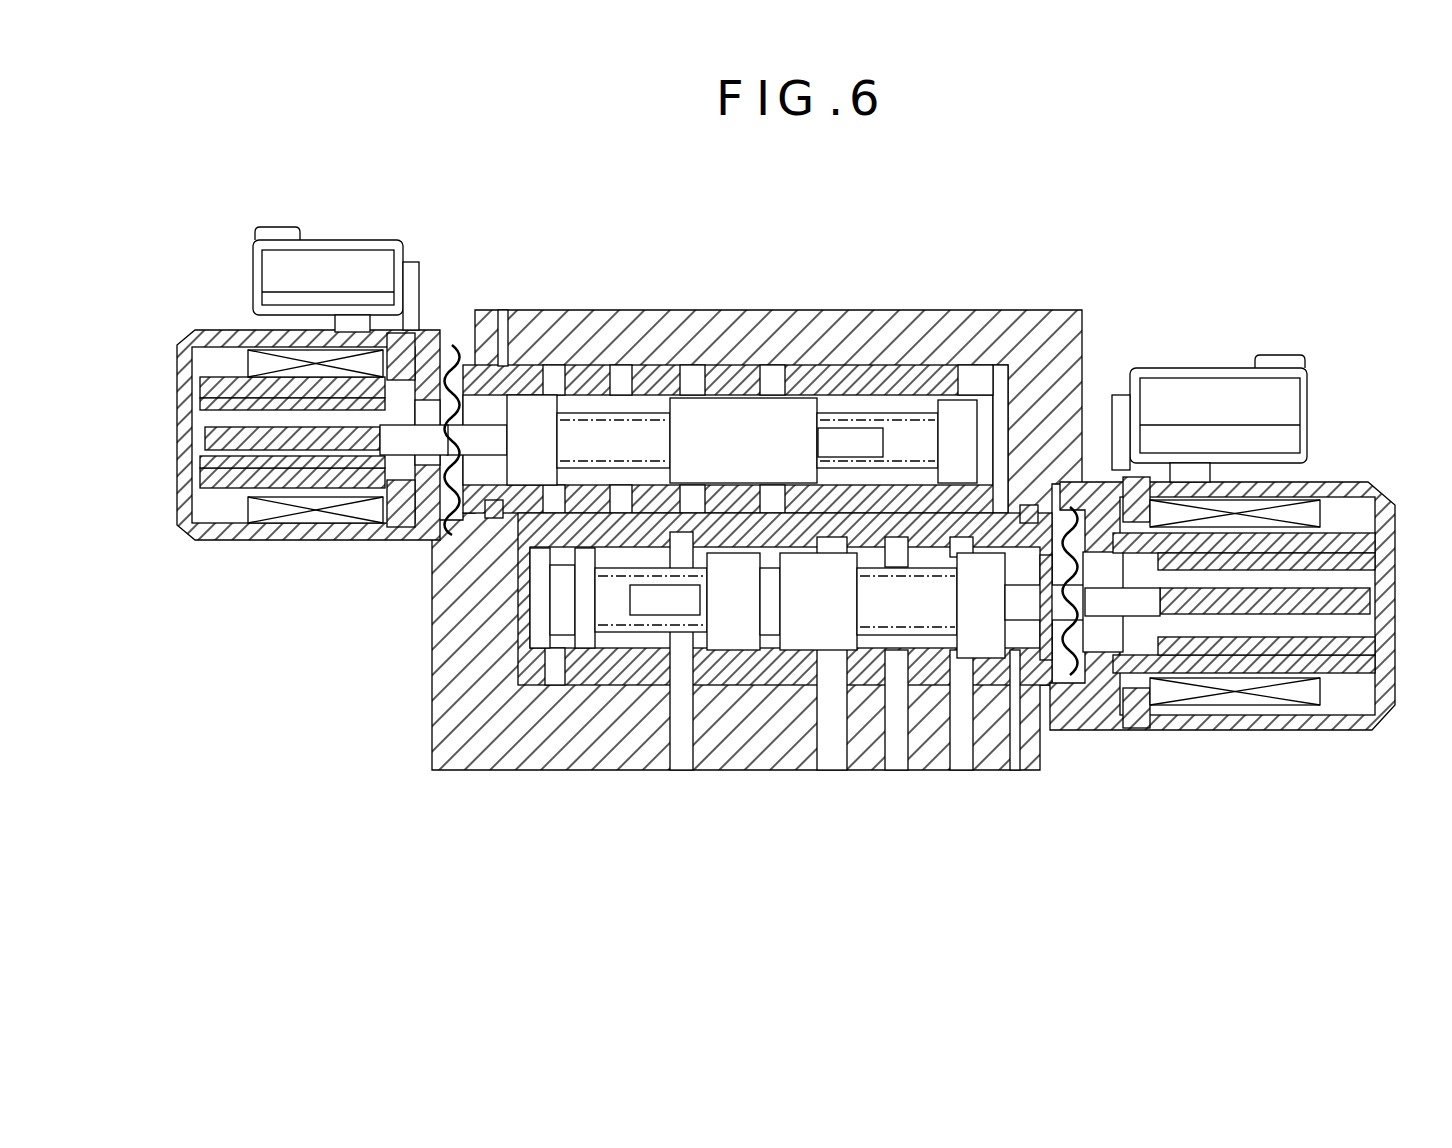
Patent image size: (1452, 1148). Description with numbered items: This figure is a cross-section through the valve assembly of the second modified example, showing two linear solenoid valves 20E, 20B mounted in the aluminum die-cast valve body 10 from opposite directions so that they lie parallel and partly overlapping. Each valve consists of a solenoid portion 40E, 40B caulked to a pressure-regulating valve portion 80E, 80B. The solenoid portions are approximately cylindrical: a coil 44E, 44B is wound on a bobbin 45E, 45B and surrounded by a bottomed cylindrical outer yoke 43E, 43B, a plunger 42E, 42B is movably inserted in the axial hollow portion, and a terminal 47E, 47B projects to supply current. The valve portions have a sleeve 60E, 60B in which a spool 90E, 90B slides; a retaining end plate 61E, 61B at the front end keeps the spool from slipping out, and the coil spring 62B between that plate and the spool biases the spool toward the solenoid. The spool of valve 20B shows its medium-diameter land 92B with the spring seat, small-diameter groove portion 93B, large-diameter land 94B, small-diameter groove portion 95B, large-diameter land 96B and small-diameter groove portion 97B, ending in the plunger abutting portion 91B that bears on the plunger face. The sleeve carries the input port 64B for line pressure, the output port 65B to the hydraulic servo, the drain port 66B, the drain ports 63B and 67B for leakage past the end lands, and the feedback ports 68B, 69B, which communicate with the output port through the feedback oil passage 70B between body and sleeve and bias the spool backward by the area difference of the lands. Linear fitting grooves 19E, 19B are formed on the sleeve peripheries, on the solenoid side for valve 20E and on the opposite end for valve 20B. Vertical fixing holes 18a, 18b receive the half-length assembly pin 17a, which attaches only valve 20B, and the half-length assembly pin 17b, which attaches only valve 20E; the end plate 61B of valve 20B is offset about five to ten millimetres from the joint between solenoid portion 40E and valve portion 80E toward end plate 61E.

The valve body 10 is at (479, 771).
The linear solenoid valve 20E is at (768, 343).
The linear solenoid valve 20B is at (735, 721).
The sleeve 60E is at (650, 365).
The sleeve 60B is at (625, 657).
The retaining end plate 61E is at (998, 422).
The retaining end plate 61B is at (537, 622).
The coil spring 62B is at (600, 662).
The drain port 63B is at (678, 752).
The input port 64B is at (831, 752).
The output port 65B is at (896, 752).
The drain port 66B is at (960, 752).
The drain port 67B is at (1015, 752).
The feedback port 68B is at (945, 400).
The feedback port 69B is at (766, 400).
The feedback oil passage 70B is at (865, 428).
The pressure-regulating valve portion 80E is at (967, 370).
The pressure-regulating valve portion 80B is at (660, 700).
The spool 90E is at (743, 351).
The spool 90B is at (689, 726).
The plunger abutting portion 91B is at (1122, 618).
The medium-diameter land 92B is at (735, 632).
The small-diameter groove portion 93B is at (758, 648).
The large-diameter land 94B is at (835, 650).
The small-diameter groove portion 95B is at (930, 627).
The large-diameter land 96B is at (990, 652).
The small-diameter groove portion 97B is at (1027, 657).
The fitting groove 19E is at (494, 492).
The fitting groove 19B is at (1055, 662).
The assembly pin 17a is at (1072, 560).
The assembly pin 17b is at (446, 520).
The fixing hole 18a is at (1032, 505).
The fixing hole 18b is at (492, 518).
The solenoid portion 40E is at (303, 373).
The solenoid portion 40B is at (1228, 531).
The plunger 42E is at (228, 405).
The plunger 42B is at (1352, 500).
The outer yoke 43E is at (190, 530).
The outer yoke 43B is at (1375, 705).
The coil 44E is at (318, 500).
The coil 44B is at (1230, 692).
The bobbin 45E is at (252, 510).
The bobbin 45B is at (1300, 707).
The terminal 47E is at (312, 248).
The terminal 47B is at (1272, 372).